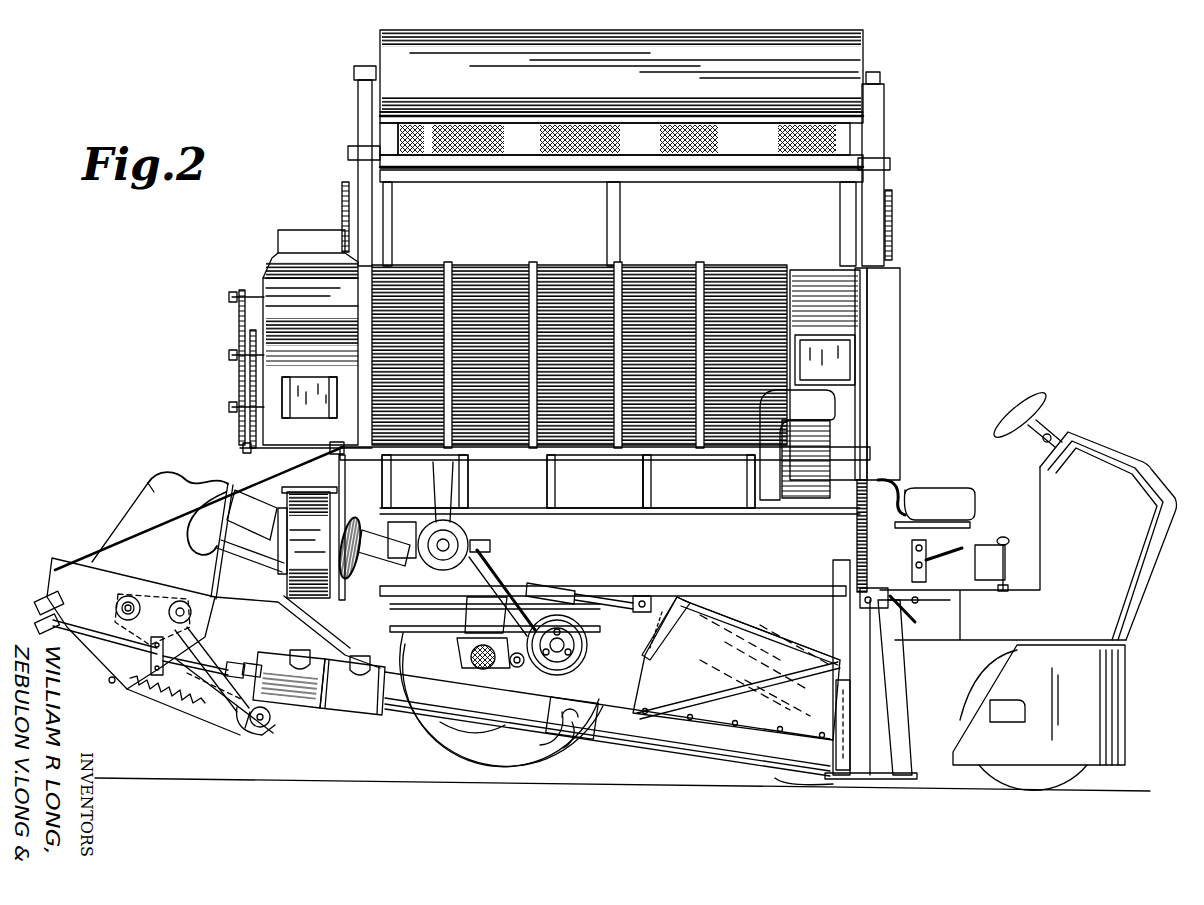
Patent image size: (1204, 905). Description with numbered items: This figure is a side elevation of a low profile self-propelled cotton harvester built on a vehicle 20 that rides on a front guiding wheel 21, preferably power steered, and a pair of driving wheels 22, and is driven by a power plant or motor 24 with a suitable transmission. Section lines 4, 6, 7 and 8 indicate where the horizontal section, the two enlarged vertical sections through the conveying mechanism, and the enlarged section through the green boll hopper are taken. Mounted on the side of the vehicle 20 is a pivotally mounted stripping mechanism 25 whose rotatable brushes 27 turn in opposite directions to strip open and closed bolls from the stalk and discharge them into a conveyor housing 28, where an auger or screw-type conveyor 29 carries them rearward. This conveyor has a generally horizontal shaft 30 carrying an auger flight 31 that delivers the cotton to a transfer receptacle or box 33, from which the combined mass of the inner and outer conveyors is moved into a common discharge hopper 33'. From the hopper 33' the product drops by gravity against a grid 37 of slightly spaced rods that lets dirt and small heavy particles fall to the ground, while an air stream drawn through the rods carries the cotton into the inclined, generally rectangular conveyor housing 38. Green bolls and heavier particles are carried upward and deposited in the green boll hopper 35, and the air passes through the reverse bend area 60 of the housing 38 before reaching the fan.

The section line 4— 4 is at (146, 452).
The section line 6— 6 is at (302, 222).
The section line 7— 7 is at (590, 262).
The section line 8— 8 is at (143, 567).
The vehicle 20 is at (1126, 612).
The front guiding wheel 21 is at (1070, 770).
The driving wheel 22 is at (503, 783).
The power plant or motor 24 is at (590, 498).
The stripping mechanism 25 is at (646, 755).
The rotatable brushes 27 is at (748, 706).
The conveyor housing 28 is at (597, 707).
The auger or screw-type conveyor 29 is at (540, 747).
The shaft 30 is at (586, 724).
The auger flight 31 is at (574, 746).
The transfer receptacle or box 33 is at (352, 702).
The common discharge hopper 33' is at (289, 698).
The green boll hopper 35 is at (96, 686).
The grid of spaced rods 37 is at (290, 738).
The conveyor housing 38 is at (262, 740).
The reverse bend area 60 is at (188, 513).